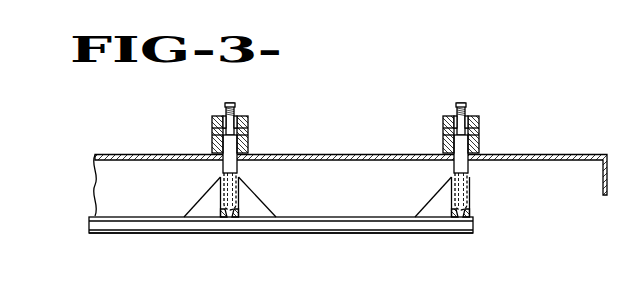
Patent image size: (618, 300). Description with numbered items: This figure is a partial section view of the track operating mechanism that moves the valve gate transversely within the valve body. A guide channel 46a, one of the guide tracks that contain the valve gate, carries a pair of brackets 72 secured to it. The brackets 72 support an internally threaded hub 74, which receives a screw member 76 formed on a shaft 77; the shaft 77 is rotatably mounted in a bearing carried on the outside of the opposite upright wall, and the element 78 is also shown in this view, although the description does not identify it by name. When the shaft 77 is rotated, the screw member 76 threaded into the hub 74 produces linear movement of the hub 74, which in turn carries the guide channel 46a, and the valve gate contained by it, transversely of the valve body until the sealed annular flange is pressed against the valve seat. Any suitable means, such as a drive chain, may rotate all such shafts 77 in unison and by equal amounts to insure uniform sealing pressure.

The shaft 77 is at (237, 108).
The nut 78 is at (246, 128).
The screw member 76 is at (237, 176).
The internally threaded hub 74 is at (238, 210).
The bracket 72 is at (262, 214).
The guide channel 46a is at (362, 233).